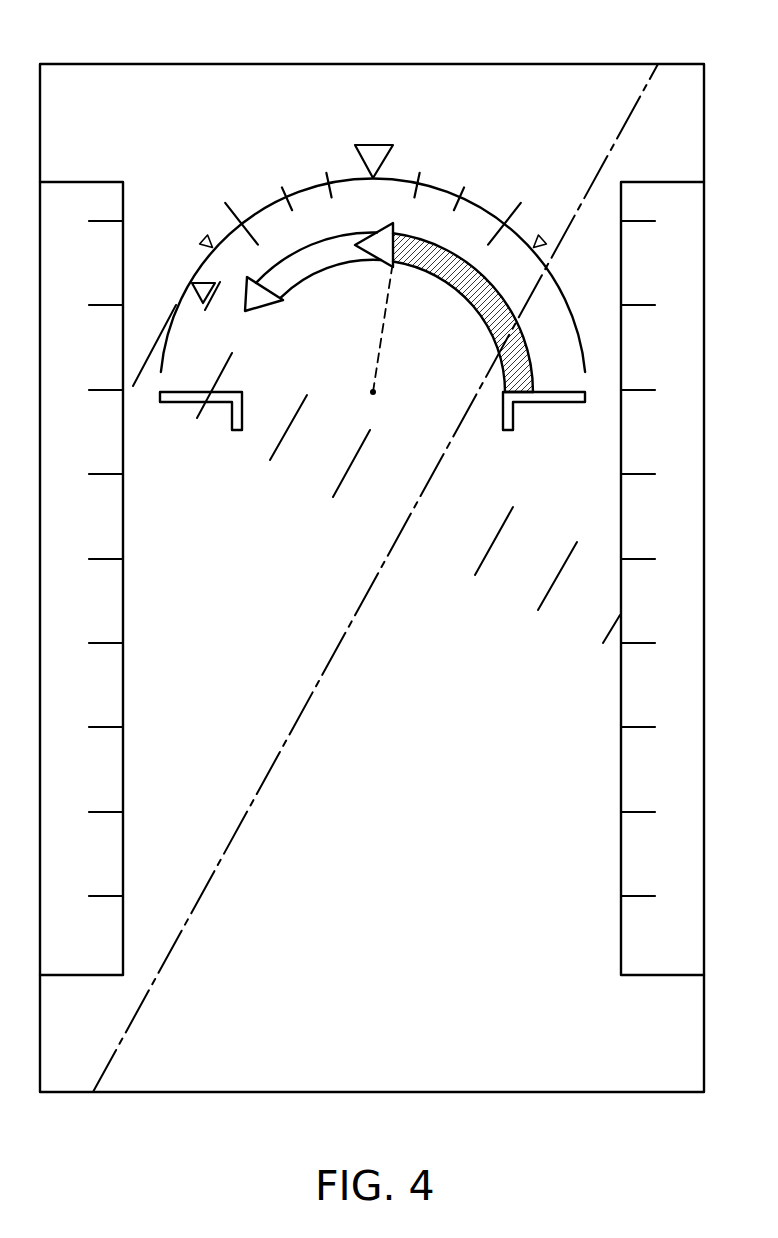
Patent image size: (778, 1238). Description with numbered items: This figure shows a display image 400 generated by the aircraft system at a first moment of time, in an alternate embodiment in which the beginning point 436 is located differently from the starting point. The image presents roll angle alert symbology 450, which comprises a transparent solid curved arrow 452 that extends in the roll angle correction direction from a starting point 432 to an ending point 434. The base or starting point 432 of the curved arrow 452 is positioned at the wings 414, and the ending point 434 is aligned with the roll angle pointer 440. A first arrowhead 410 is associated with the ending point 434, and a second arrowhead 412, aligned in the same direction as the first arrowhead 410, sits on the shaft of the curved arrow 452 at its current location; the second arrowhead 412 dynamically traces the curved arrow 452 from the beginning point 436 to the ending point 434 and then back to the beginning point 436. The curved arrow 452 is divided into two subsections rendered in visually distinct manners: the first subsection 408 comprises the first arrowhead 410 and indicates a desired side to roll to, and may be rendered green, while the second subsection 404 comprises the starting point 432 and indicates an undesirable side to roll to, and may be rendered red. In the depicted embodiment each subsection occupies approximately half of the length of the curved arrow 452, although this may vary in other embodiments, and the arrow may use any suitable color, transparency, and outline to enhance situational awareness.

The display image 400 is at (78, 63).
The second subsection 404 is at (463, 324).
The first subsection 408 is at (313, 305).
The first arrowhead 410 is at (245, 312).
The second arrowhead 412 is at (412, 271).
The wings 414 is at (548, 402).
The starting point 432 is at (503, 394).
The ending point 434 is at (247, 315).
The beginning point 436 is at (398, 249).
The roll angle pointer 440 is at (198, 278).
The roll angle alert symbology 450 is at (453, 260).
The curved arrow 452 is at (307, 260).